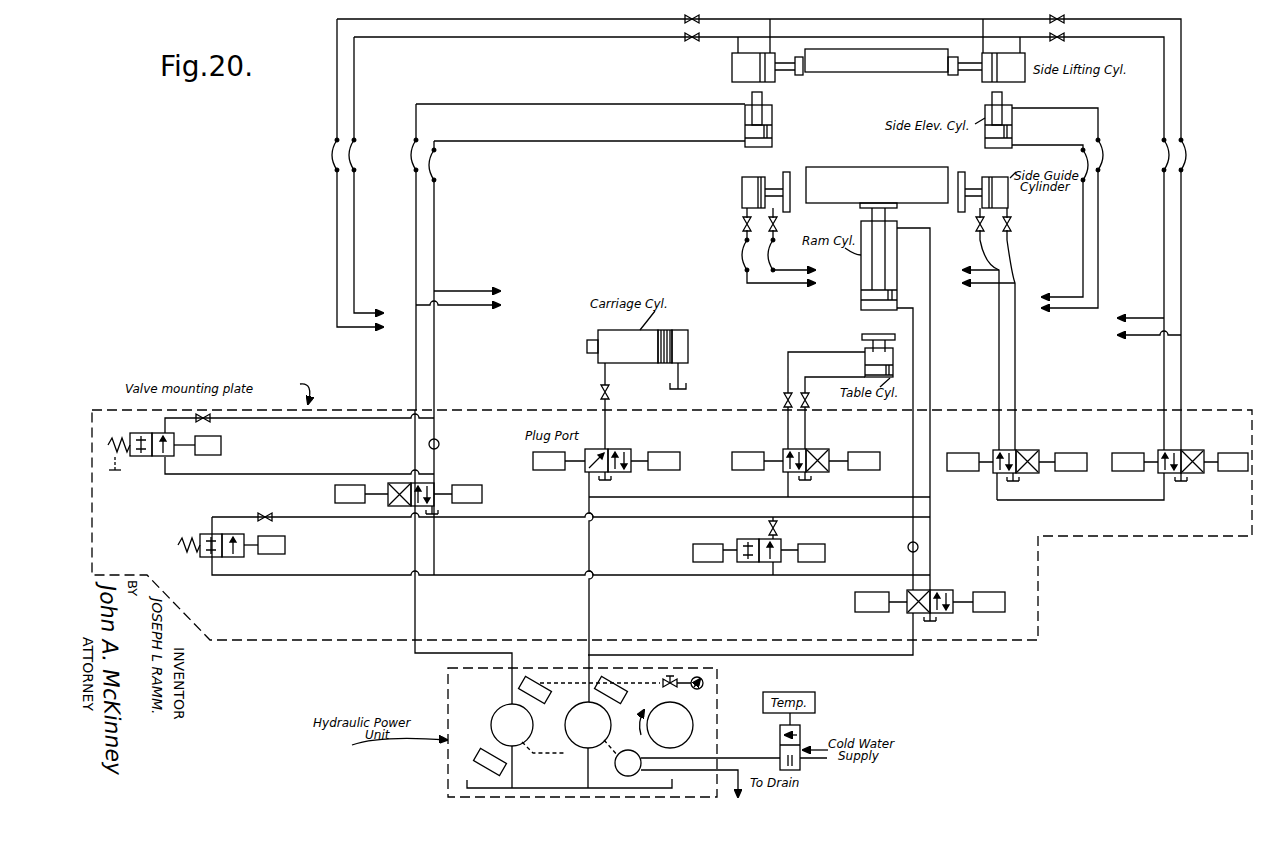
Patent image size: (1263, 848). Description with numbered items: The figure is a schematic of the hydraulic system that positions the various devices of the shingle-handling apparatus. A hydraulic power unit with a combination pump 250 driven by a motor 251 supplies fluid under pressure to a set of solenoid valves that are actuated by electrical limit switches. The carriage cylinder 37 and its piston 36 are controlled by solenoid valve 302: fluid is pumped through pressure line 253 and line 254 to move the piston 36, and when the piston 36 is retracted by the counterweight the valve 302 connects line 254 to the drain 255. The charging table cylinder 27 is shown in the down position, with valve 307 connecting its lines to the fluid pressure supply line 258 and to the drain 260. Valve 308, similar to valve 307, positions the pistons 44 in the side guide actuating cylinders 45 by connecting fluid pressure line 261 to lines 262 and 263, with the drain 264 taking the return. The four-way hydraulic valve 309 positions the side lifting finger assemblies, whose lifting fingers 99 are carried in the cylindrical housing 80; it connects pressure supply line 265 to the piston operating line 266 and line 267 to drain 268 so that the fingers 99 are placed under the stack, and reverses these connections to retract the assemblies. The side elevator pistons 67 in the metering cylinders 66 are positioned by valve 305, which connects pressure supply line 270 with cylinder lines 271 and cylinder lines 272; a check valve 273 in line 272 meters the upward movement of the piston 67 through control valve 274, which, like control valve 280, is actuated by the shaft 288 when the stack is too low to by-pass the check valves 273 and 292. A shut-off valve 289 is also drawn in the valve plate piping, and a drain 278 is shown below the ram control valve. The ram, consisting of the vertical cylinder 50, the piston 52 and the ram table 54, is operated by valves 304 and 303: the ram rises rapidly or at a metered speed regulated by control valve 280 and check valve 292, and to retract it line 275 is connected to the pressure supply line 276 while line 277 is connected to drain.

The lifting finger 99 is at (784, 58).
The cylindrical housing 80 is at (732, 68).
The metering cylinder 66 is at (773, 111).
The piston 67 is at (772, 135).
The ram table 54 is at (873, 167).
The piston 44 is at (755, 180).
The actuating cylinder 45 is at (742, 191).
The piston 52 is at (861, 298).
The vertical cylinder 50 is at (861, 313).
The charging table cylinder 27 is at (865, 358).
The piston 36 is at (587, 345).
The carriage cylinder 37 is at (627, 363).
The line 262 is at (773, 256).
The line 263 is at (740, 258).
The cylinder lines 271 is at (416, 215).
The cylinder lines 272 is at (434, 215).
The piston operating line 266 is at (354, 272).
The line 267 is at (337, 262).
The check valve 273 is at (440, 444).
The valve 305 is at (434, 483).
The shaft 288 is at (212, 421).
The control valve 274 is at (165, 458).
The shut-off valve 289 is at (265, 512).
The control valve 280 is at (235, 555).
The pressure supply line 270 is at (415, 540).
The line 254 is at (607, 433).
The solenoid valve 302 is at (597, 460).
The pressure line 253 is at (589, 480).
The drain 255 is at (612, 488).
The valve 307 is at (812, 450).
The line 277 is at (913, 428).
The fluid pressure supply line 258 is at (788, 482).
The drain 260 is at (810, 489).
The line 275 is at (930, 428).
The valve 308 is at (1017, 450).
The four-way hydraulic valve 309 is at (1183, 450).
The fluid pressure line 261 is at (997, 482).
The drain 264 is at (1019, 490).
The drain 268 is at (1186, 490).
The pressure supply line 265 is at (1115, 501).
The valve 304 is at (785, 540).
The check valve 292 is at (908, 547).
The valve 303 is at (935, 586).
The drain 278 is at (940, 624).
The pressure supply line 276 is at (903, 657).
The combination pump 250 is at (448, 758).
The motor 251 is at (655, 710).